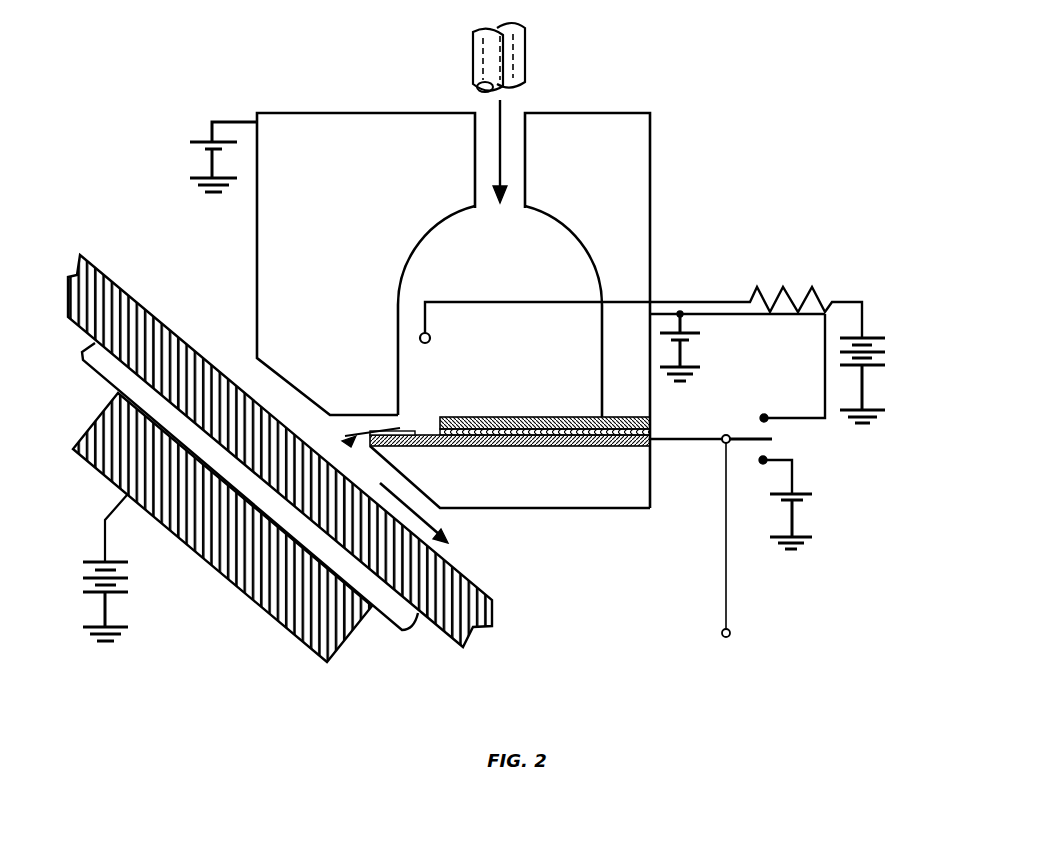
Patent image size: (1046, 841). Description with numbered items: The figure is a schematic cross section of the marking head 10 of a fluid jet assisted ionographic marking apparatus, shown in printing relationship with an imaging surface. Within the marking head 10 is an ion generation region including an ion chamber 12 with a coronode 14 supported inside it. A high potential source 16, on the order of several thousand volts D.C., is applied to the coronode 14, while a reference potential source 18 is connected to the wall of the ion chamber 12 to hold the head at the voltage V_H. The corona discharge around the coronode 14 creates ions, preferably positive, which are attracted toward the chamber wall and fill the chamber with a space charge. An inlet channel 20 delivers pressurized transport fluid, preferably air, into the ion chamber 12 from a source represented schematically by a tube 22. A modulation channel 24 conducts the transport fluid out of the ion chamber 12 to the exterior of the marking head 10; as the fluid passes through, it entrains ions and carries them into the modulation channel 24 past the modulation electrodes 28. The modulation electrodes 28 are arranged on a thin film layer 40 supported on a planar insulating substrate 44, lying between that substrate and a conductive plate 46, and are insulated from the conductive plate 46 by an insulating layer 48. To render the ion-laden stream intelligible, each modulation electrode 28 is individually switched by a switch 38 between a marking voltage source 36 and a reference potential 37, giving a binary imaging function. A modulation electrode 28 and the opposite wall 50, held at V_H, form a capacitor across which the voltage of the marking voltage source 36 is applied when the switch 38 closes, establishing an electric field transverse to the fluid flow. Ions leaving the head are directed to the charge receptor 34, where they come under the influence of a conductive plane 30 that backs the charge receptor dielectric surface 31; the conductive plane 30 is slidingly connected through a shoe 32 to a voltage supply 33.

The marking head 10 is at (651, 145).
The ion chamber 12 is at (555, 220).
The coronode 14 is at (432, 338).
The high potential source 16 is at (873, 333).
The reference potential source 18 is at (205, 140).
The inlet channel 20 is at (476, 192).
The tube 22 is at (520, 55).
The modulation channel 24 is at (350, 430).
The modulation electrodes 28 is at (400, 430).
The conductive plane 30 is at (392, 615).
The charge receptor dielectric surface 31 is at (453, 568).
The shoe 32 is at (240, 590).
The voltage supply 33 is at (123, 562).
The charge receptor 34 is at (516, 611).
The marking voltage source 36 is at (798, 503).
The reference potential 37 is at (805, 420).
The switch 38 is at (727, 435).
The thin film layer 40 is at (652, 443).
The planar insulating substrate 44 is at (652, 497).
The conductive plate 46 is at (652, 420).
The insulating layer 48 is at (652, 432).
The opposite wall 50 is at (360, 424).